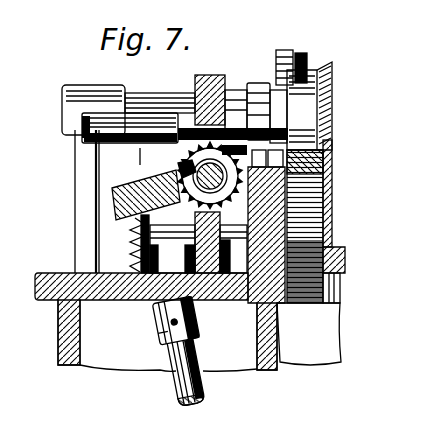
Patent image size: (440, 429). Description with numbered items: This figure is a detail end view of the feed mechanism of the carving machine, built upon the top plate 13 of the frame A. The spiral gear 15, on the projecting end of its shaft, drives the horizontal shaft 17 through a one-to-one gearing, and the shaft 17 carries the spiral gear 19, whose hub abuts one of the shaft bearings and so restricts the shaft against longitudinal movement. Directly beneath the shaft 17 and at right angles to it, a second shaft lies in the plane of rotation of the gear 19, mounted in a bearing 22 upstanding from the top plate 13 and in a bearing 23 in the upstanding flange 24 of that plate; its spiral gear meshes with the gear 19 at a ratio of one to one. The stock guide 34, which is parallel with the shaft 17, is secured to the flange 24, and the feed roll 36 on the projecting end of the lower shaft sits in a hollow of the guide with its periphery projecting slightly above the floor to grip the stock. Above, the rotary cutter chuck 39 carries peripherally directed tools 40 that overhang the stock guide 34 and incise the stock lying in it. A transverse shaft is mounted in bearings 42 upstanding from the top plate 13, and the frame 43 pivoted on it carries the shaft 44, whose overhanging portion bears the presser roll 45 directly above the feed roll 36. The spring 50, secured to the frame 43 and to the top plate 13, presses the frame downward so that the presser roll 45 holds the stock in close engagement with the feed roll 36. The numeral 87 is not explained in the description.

The top plate 13 is at (57, 273).
The spiral gear 15 is at (125, 190).
The horizontal shaft 17 is at (180, 170).
The spiral gear 19 is at (184, 158).
The bearing 22 is at (198, 242).
The bearing 23 is at (240, 300).
The upstanding flange 24 is at (270, 290).
The stock guide 34 is at (330, 227).
The feed roll 36 is at (337, 296).
The rotary cutter chuck 39 is at (282, 73).
The tools 40 is at (302, 55).
The bearings 42 is at (86, 205).
The frame 43 is at (98, 150).
The shaft 44 is at (200, 118).
The presser roll 45 is at (322, 115).
The spring 50 is at (132, 251).
The flange 87 is at (340, 282).
The frame A is at (62, 335).